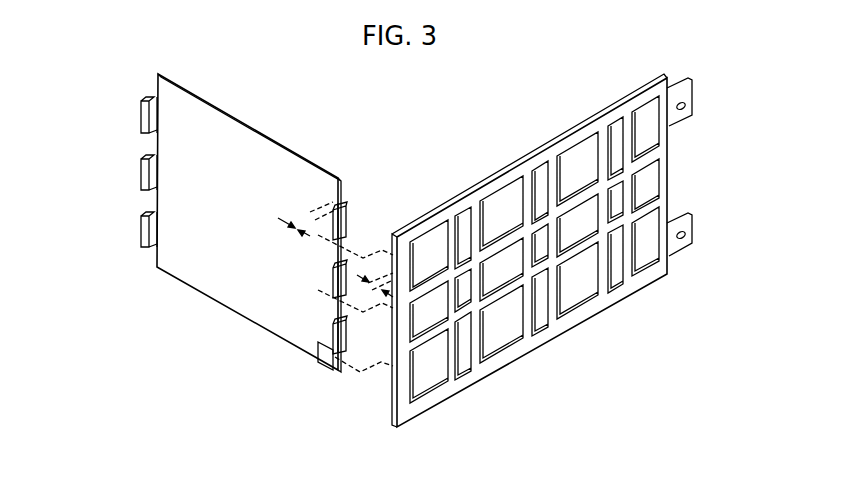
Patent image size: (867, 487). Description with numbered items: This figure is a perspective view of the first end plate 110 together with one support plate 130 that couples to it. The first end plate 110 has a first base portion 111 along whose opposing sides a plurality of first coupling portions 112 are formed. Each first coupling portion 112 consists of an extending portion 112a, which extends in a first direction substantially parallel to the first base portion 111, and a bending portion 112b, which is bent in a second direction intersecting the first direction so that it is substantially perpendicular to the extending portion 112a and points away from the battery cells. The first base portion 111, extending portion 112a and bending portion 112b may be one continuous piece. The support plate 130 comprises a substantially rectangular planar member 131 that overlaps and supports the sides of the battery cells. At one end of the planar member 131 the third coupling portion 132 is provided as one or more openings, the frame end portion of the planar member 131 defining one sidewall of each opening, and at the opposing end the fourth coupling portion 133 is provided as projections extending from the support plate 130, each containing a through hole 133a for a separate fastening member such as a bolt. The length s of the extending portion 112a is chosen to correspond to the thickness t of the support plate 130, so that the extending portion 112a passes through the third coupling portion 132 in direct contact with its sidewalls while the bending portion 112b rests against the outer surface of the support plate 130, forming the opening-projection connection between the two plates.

The first end plate 110 is at (226, 252).
The first base portion 111 is at (242, 302).
The first coupling portion 112 is at (203, 264).
The extending portion 112a is at (143, 224).
The bending portion 112b is at (140, 213).
The support plate 130 is at (576, 245).
The planar member 131 is at (543, 337).
The third coupling portion 132 is at (425, 370).
The fourth coupling portion 133 is at (714, 159).
The through hole 133a is at (697, 106).